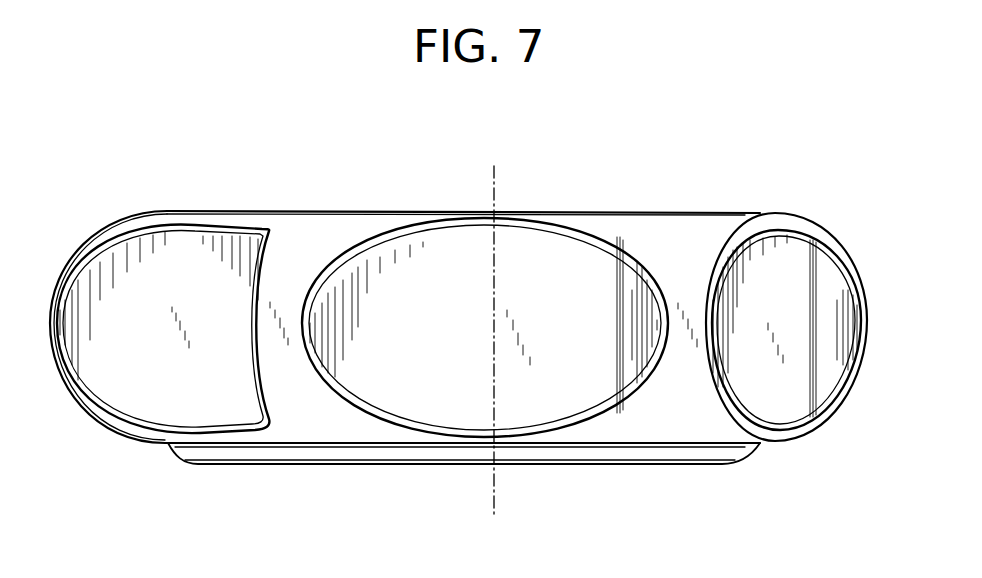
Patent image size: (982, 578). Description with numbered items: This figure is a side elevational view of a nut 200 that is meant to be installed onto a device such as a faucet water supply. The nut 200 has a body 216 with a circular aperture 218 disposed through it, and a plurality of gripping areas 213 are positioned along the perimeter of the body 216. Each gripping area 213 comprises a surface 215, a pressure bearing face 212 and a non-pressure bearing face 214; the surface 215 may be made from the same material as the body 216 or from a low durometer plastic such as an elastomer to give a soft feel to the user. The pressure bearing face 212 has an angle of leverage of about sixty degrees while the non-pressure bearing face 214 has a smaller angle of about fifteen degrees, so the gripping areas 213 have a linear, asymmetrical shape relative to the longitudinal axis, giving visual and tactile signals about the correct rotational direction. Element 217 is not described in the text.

The nut 200 is at (594, 156).
The pressure bearing face 212 is at (833, 283).
The gripping area 213 is at (463, 270).
The non-pressure bearing face 214 is at (773, 315).
The surface 215 is at (430, 304).
The body 216 is at (703, 230).
The left end window 217 is at (243, 210).
The circular aperture 218 is at (640, 212).